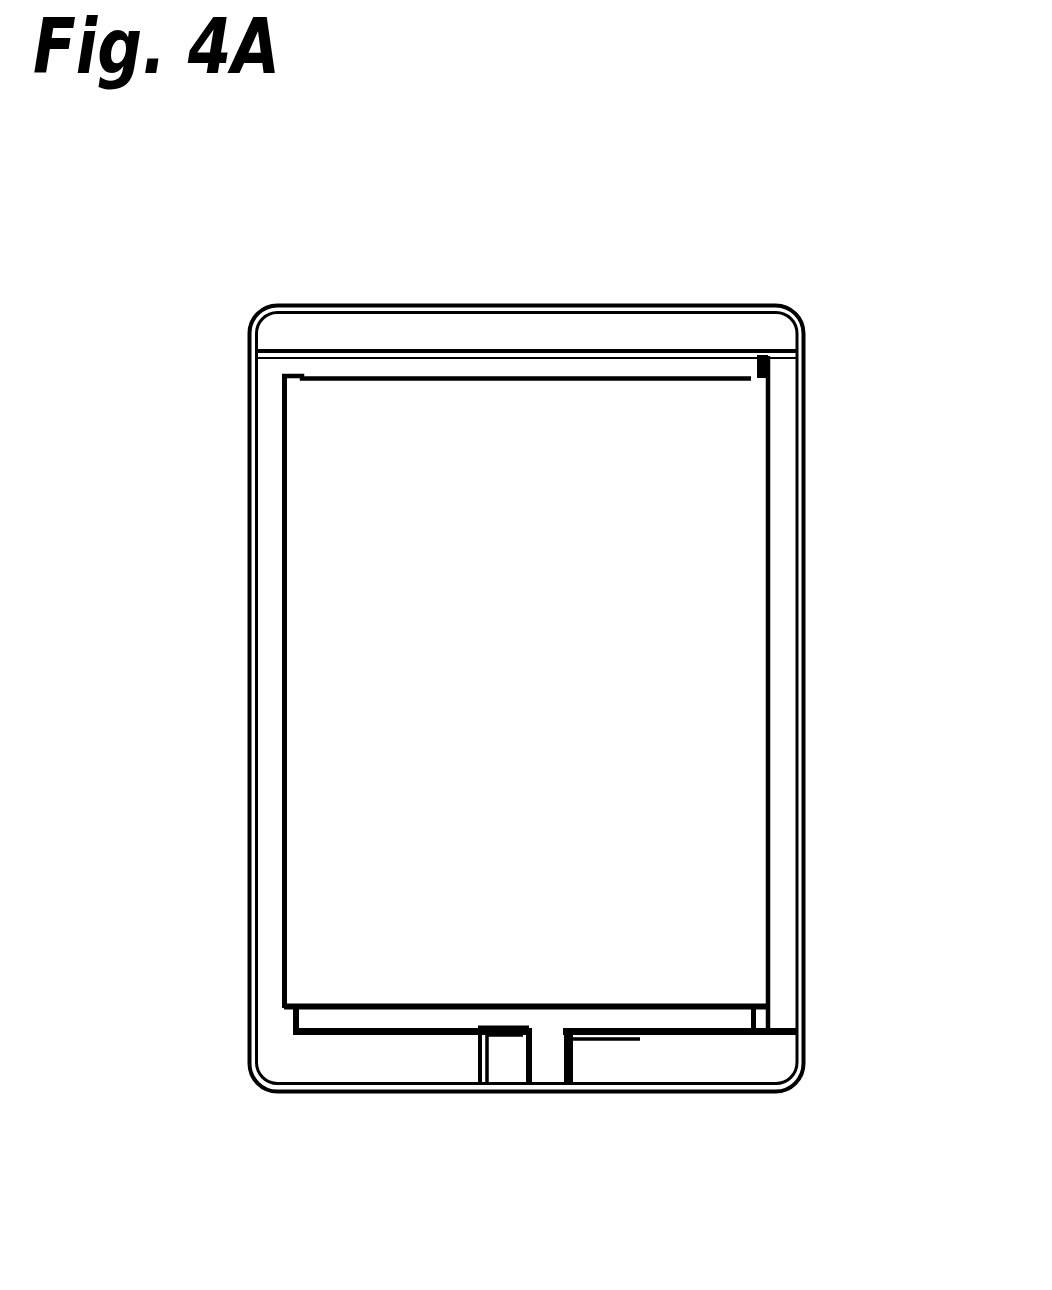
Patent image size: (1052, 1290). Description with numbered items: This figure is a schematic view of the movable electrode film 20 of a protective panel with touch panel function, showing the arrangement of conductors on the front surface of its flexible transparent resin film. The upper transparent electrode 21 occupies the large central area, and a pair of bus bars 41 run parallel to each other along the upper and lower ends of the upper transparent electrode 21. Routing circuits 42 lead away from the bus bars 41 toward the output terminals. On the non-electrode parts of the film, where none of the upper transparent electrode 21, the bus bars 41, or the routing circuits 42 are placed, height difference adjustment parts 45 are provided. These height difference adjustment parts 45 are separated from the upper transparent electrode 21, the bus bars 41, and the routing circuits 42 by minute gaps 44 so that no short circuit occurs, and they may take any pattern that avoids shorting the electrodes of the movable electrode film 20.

The movable electrode film 20 is at (782, 280).
The upper transparent electrode 21 is at (700, 531).
The bus bars 41 is at (498, 370).
The routing circuits 42 is at (389, 1058).
The minute gaps 44 is at (760, 366).
The height difference adjustment parts 45 is at (350, 333).